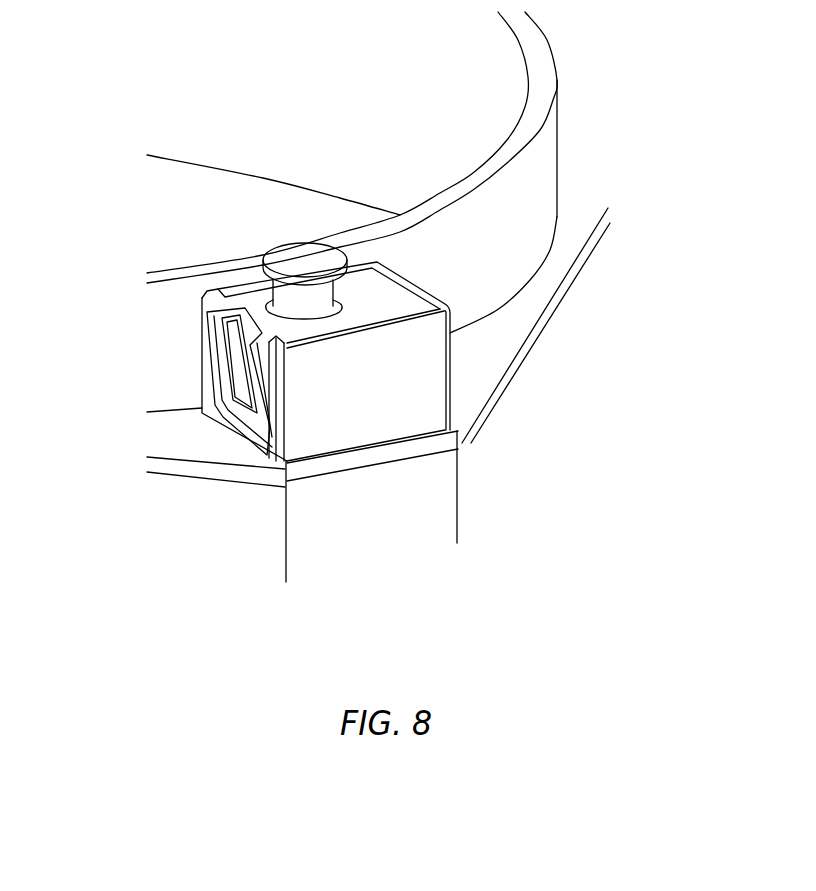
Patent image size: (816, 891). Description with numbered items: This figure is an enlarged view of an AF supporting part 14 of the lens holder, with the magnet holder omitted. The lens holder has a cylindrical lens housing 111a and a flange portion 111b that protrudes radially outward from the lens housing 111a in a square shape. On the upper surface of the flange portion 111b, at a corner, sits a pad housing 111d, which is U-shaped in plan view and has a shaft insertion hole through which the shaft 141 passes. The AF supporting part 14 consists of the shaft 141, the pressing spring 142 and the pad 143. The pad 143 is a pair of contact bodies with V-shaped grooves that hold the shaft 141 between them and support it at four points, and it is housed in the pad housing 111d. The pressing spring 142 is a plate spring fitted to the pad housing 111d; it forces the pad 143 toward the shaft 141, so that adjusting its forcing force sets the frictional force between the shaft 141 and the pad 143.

The AF supporting part 14 is at (247, 246).
The shaft 141 is at (317, 265).
The pressing spring 142 is at (395, 298).
The pad 143 is at (240, 367).
The lens housing 111a is at (557, 143).
The flange portion 111b is at (510, 330).
The pad housing 111d is at (412, 418).